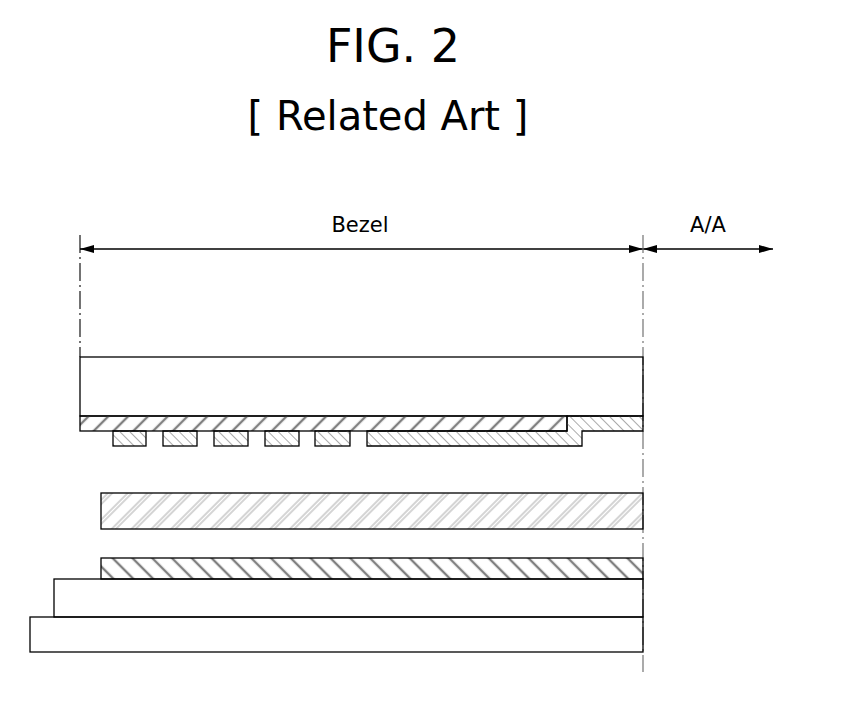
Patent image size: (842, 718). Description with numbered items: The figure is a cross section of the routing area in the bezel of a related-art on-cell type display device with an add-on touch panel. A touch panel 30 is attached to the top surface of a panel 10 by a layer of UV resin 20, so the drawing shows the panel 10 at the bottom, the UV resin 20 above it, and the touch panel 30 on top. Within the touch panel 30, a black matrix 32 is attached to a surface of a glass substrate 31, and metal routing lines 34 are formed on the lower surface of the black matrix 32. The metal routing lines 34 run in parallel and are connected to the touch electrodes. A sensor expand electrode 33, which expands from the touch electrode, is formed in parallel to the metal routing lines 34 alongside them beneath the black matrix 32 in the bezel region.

The panel 10 is at (652, 558).
The UV resin 20 is at (615, 515).
The touch panel 30 is at (240, 307).
The glass substrate 31 is at (244, 396).
The black matrix 32 is at (292, 425).
The sensor expand electrode 33 is at (392, 440).
The metal routing lines 34 is at (337, 438).